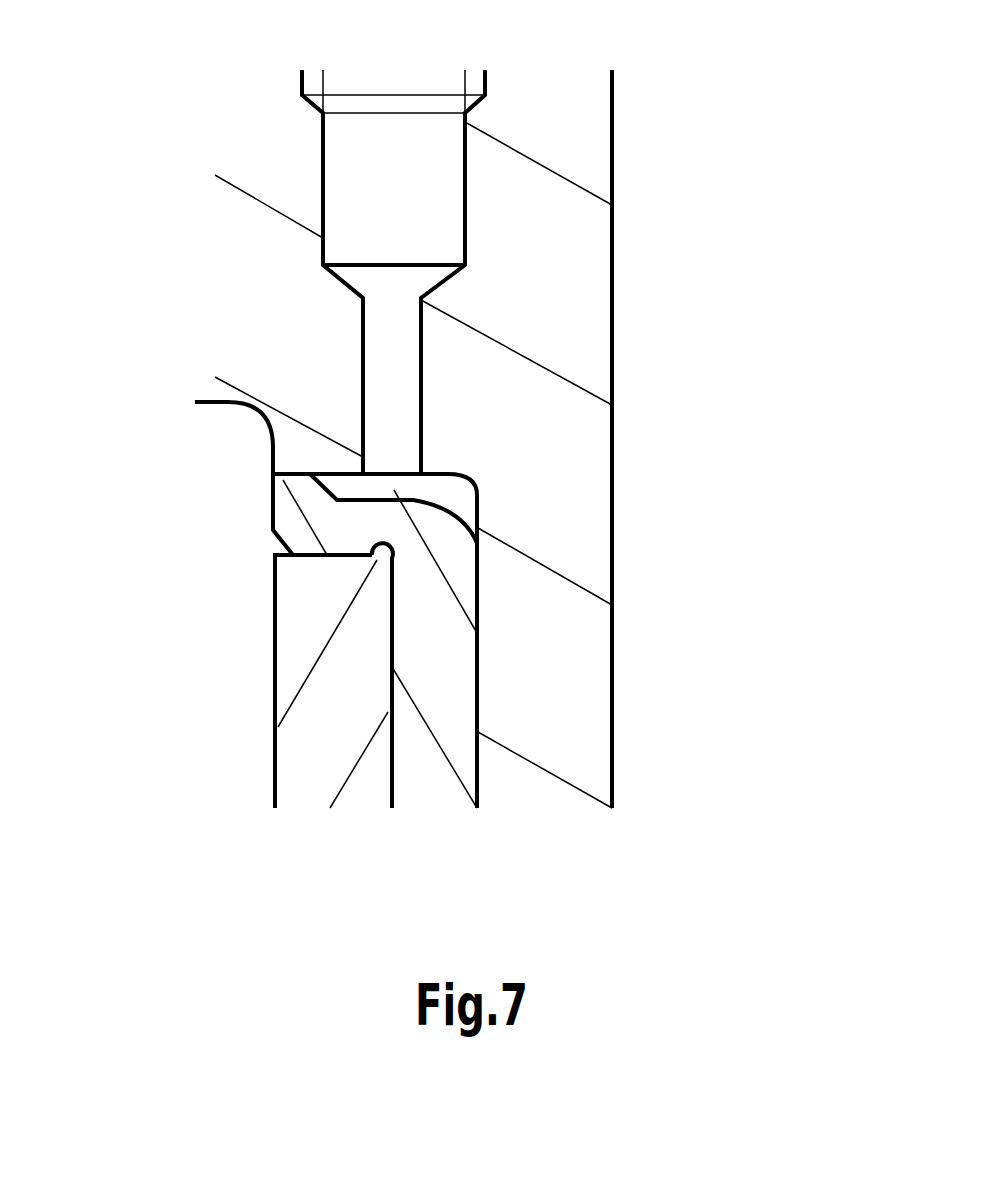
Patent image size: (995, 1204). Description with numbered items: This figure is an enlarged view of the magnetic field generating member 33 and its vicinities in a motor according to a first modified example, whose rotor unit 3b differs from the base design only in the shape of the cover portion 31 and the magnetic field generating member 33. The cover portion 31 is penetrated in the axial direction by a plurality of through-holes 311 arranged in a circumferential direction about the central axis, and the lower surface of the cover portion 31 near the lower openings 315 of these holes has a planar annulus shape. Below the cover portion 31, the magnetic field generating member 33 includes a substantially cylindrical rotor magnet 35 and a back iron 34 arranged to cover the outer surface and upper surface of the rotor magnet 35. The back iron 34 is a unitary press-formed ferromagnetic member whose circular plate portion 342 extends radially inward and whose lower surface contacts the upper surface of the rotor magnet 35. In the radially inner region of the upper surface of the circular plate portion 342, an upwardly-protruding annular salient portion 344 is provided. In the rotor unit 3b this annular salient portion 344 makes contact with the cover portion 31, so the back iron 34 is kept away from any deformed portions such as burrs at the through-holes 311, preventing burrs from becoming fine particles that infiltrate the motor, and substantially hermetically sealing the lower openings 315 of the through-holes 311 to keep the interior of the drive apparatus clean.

The rotor unit 3b is at (753, 180).
The cover portion 31 is at (643, 247).
The through-holes 311 is at (388, 407).
The lower openings 315 is at (392, 452).
The magnetic field generating member 33 is at (143, 697).
The back iron 34 is at (430, 646).
The circular plate portion 342 is at (335, 528).
The annular salient portion 344 is at (298, 490).
The rotor magnet 35 is at (343, 735).